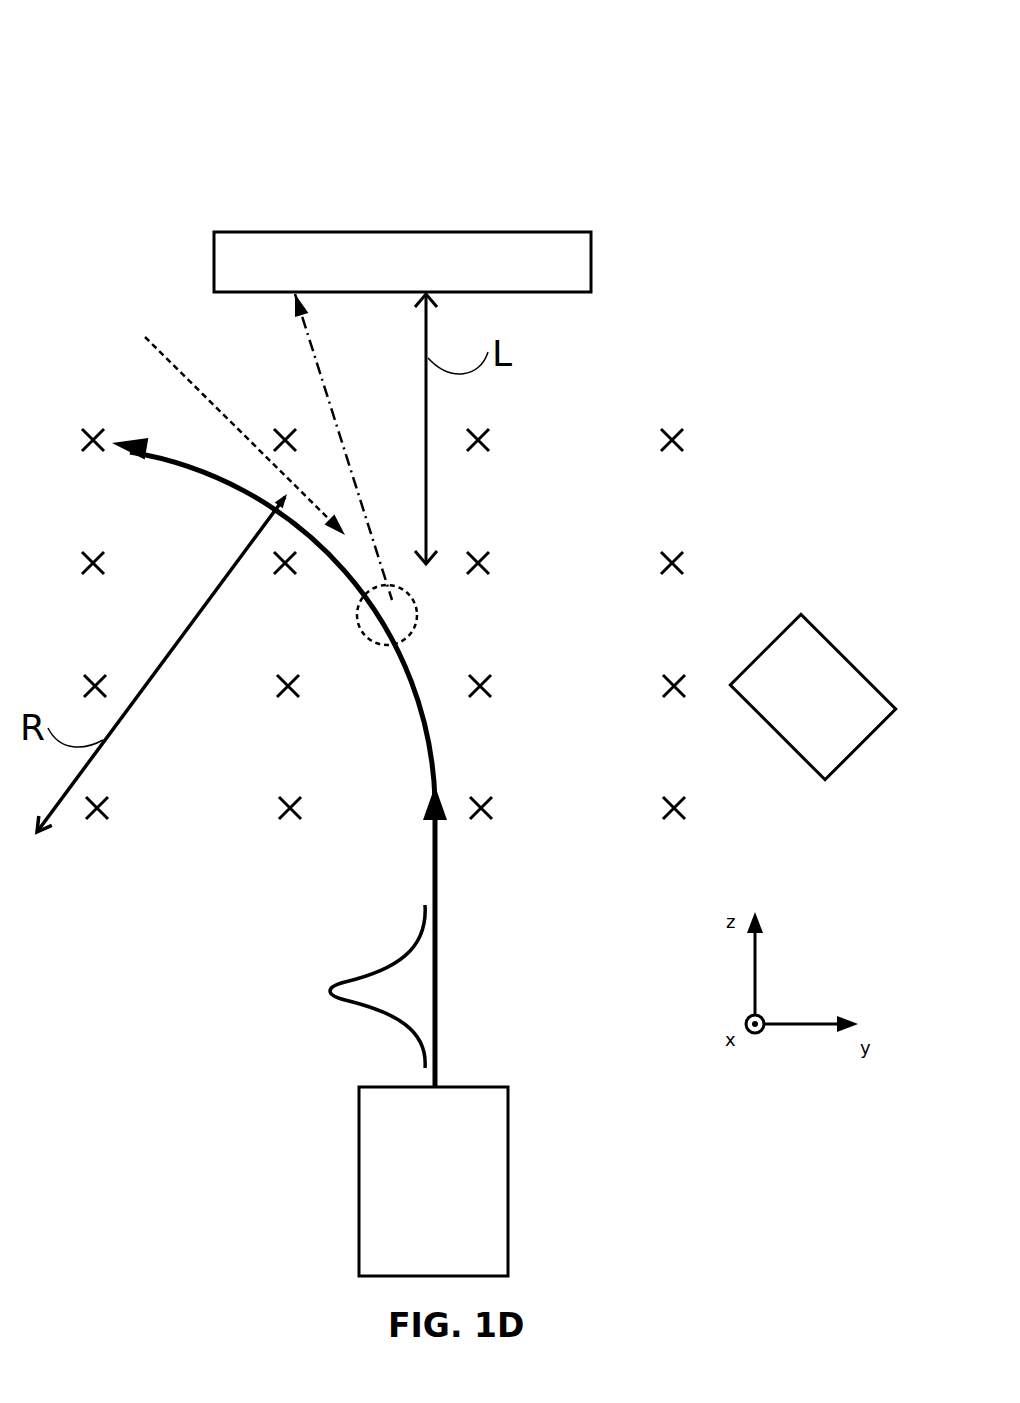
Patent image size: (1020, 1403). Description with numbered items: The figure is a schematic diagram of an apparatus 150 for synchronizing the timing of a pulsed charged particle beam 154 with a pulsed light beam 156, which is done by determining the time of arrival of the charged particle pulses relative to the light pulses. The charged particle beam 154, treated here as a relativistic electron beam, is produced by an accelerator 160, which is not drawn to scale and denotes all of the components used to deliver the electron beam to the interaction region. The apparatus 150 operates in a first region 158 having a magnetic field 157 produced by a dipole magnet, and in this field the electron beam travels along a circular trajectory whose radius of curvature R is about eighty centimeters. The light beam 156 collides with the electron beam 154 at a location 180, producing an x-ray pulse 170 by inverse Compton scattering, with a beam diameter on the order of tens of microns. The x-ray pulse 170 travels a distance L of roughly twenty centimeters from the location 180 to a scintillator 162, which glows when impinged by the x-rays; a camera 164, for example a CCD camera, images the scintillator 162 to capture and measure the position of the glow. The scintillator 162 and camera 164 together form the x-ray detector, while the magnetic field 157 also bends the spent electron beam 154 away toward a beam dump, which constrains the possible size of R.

The apparatus 150 is at (121, 66).
The pulsed charged particle beam 154 is at (352, 938).
The pulsed light beam 156 is at (176, 343).
The magnetic field 157 is at (684, 712).
The first region 158 is at (577, 808).
The accelerator 160 is at (433, 1181).
The scintillator 162 is at (402, 262).
The camera 164 is at (812, 696).
The x-ray pulse 170 is at (350, 460).
The location 180 is at (356, 620).